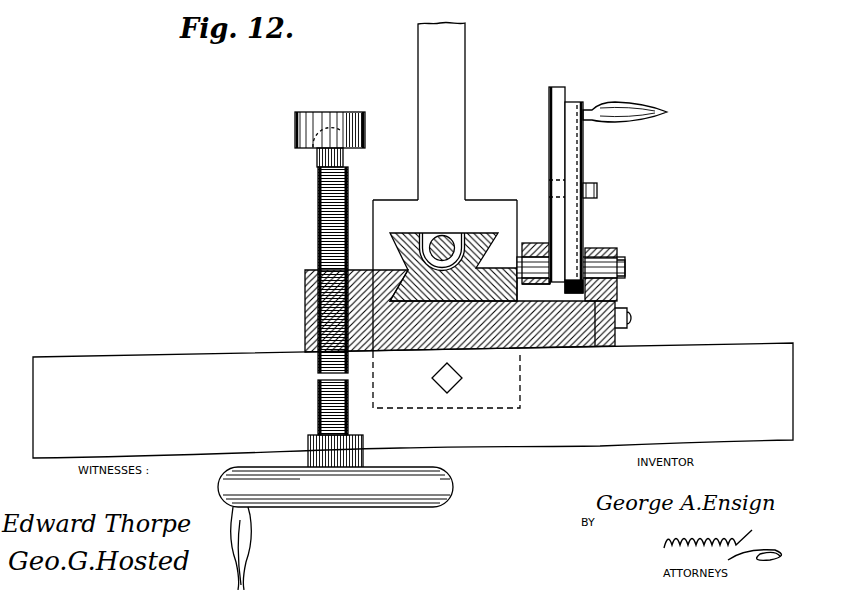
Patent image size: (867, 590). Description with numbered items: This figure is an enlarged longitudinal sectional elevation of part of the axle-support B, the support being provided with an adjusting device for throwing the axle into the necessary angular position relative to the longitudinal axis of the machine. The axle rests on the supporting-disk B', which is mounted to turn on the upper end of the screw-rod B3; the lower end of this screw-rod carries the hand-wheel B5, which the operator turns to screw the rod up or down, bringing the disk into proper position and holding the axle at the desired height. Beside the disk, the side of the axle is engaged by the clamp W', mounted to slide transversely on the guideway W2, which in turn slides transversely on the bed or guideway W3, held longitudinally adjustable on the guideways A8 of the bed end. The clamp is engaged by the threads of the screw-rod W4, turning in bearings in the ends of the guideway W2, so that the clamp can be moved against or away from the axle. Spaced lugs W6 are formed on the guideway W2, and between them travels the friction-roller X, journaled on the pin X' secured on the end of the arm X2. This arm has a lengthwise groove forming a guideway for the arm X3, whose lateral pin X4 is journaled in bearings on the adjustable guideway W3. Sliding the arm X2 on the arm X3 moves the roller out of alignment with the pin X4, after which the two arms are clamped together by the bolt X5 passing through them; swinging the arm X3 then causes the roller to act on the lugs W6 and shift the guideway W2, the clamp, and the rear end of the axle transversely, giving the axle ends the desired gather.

The guideways A8 is at (227, 360).
The support B is at (354, 339).
The supporting-disk B' is at (330, 127).
The screw-rod B3 is at (318, 193).
The hand-wheel B5 is at (335, 512).
The clamp W' is at (445, 161).
The guideway W2 is at (480, 233).
The bed or guideway W3 is at (565, 335).
The screw-rod W4 is at (442, 234).
The lugs W6 is at (533, 243).
The friction-roller X is at (557, 262).
The pin X' is at (536, 290).
The arm X2 is at (553, 133).
The arm X3 is at (575, 150).
The lateral pin X4 is at (623, 272).
The bolt X5 is at (598, 189).